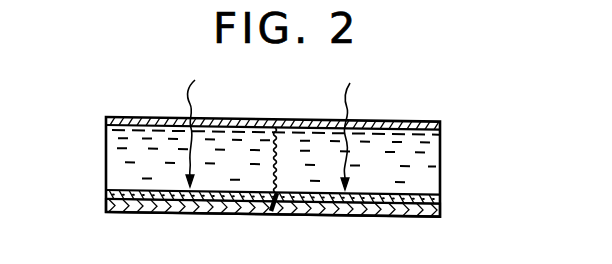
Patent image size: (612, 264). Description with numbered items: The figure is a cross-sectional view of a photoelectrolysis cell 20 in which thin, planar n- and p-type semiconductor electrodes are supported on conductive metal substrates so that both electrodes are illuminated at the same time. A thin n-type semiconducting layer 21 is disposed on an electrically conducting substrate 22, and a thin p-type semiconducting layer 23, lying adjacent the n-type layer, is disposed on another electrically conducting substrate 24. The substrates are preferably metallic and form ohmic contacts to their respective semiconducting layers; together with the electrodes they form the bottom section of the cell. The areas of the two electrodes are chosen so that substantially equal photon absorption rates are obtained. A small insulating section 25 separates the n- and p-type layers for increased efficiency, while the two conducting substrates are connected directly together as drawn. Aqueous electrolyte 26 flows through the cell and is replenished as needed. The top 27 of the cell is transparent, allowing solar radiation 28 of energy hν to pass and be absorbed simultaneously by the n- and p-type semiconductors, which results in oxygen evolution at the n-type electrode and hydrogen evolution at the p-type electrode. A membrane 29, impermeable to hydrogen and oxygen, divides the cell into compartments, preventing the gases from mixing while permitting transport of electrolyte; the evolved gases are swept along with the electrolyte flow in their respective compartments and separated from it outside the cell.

The cell 20 is at (85, 135).
The n-type semiconducting layer 21 is at (117, 195).
The electrically conducting substrate 22 is at (195, 210).
The p-type semiconducting layer 23 is at (437, 198).
The electrically conducting substrate 24 is at (378, 210).
The insulating section 25 is at (278, 202).
The aqueous electrolyte 26 is at (425, 148).
The top of the cell 27 is at (138, 122).
The solar radiation 28 is at (195, 99).
The membrane 29 is at (272, 145).